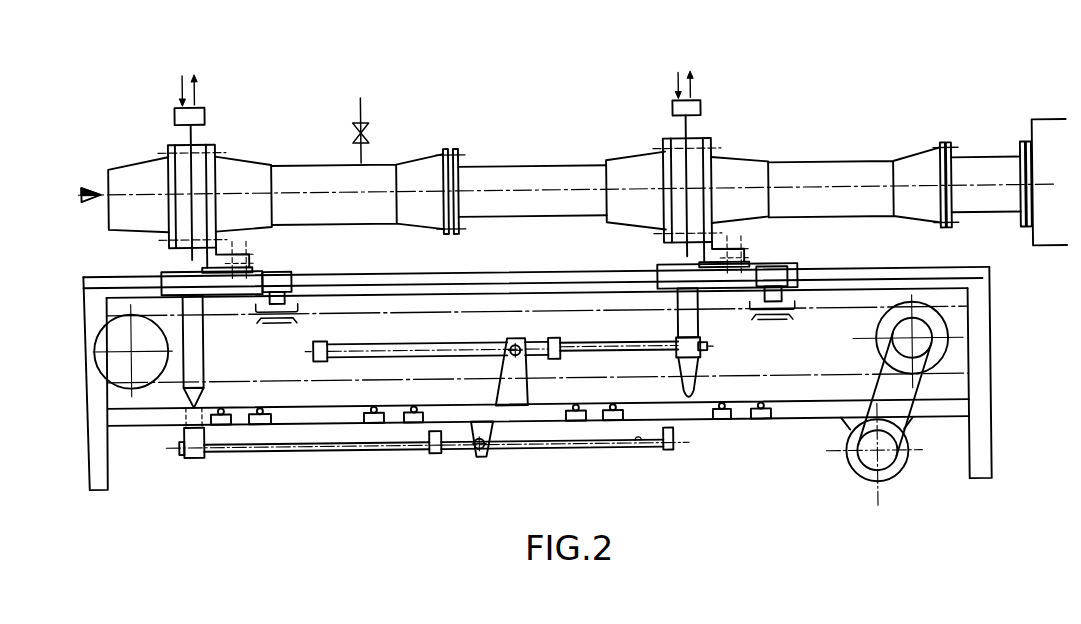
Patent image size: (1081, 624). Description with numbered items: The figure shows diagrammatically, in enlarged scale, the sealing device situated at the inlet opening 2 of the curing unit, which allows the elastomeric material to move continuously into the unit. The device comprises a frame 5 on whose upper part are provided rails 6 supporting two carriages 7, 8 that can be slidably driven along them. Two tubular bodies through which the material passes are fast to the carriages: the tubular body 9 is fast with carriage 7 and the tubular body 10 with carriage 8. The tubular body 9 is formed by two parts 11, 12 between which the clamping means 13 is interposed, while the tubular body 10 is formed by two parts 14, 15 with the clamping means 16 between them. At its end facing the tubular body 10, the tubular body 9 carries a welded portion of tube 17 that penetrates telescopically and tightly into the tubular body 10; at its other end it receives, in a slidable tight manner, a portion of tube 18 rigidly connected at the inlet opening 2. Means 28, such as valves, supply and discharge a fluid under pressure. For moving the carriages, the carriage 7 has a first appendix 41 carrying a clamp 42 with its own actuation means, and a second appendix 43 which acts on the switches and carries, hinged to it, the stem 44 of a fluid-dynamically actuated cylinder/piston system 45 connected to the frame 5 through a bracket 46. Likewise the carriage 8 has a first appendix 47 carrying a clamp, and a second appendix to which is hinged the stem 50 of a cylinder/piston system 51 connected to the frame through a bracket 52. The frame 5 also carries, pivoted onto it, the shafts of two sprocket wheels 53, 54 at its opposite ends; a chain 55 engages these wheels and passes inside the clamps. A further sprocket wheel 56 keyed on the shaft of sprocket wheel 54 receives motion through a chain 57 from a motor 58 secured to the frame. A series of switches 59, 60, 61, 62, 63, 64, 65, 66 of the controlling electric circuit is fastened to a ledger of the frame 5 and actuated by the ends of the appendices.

The inlet opening 2 is at (1023, 143).
The frame 5 is at (975, 337).
The rails 6 is at (478, 279).
The carriage 7 is at (740, 277).
The carriage 8 is at (247, 279).
The tubular body 9 is at (813, 180).
The tubular body 10 is at (313, 181).
The part of tubular body 11 is at (737, 164).
The part of tubular body 12 is at (623, 169).
The clamping means 13 is at (688, 159).
The part of tubular body 14 is at (258, 170).
The part of tubular body 15 is at (137, 172).
The clamping means 16 is at (198, 159).
The portion of tube 17 is at (515, 175).
The portion of tube 18 is at (987, 180).
The means for supply and discharge of fluid under pressure 28 is at (187, 68).
The first appendix 41 is at (793, 281).
The clamp 42 is at (790, 315).
The second appendix 43 is at (682, 327).
The stem 44 is at (573, 348).
The cylinder/piston system 45 is at (380, 348).
The bracket 46 is at (495, 396).
The first appendix 47 is at (275, 299).
The stem 50 is at (297, 449).
The cylinder/piston system 51 is at (530, 443).
The bracket 52 is at (475, 447).
The sprocket wheel 53 is at (122, 326).
The sprocket wheel 54 is at (920, 319).
The chain 55 is at (493, 311).
The further sprocket wheel 56 is at (917, 347).
The chain 57 is at (920, 384).
The motor 58 is at (893, 471).
The switch 59 is at (222, 423).
The switch 60 is at (257, 424).
The switch 61 is at (372, 421).
The switch 62 is at (412, 421).
The switch 63 is at (573, 421).
The switch 64 is at (612, 421).
The switch 65 is at (717, 422).
The switch 66 is at (760, 423).